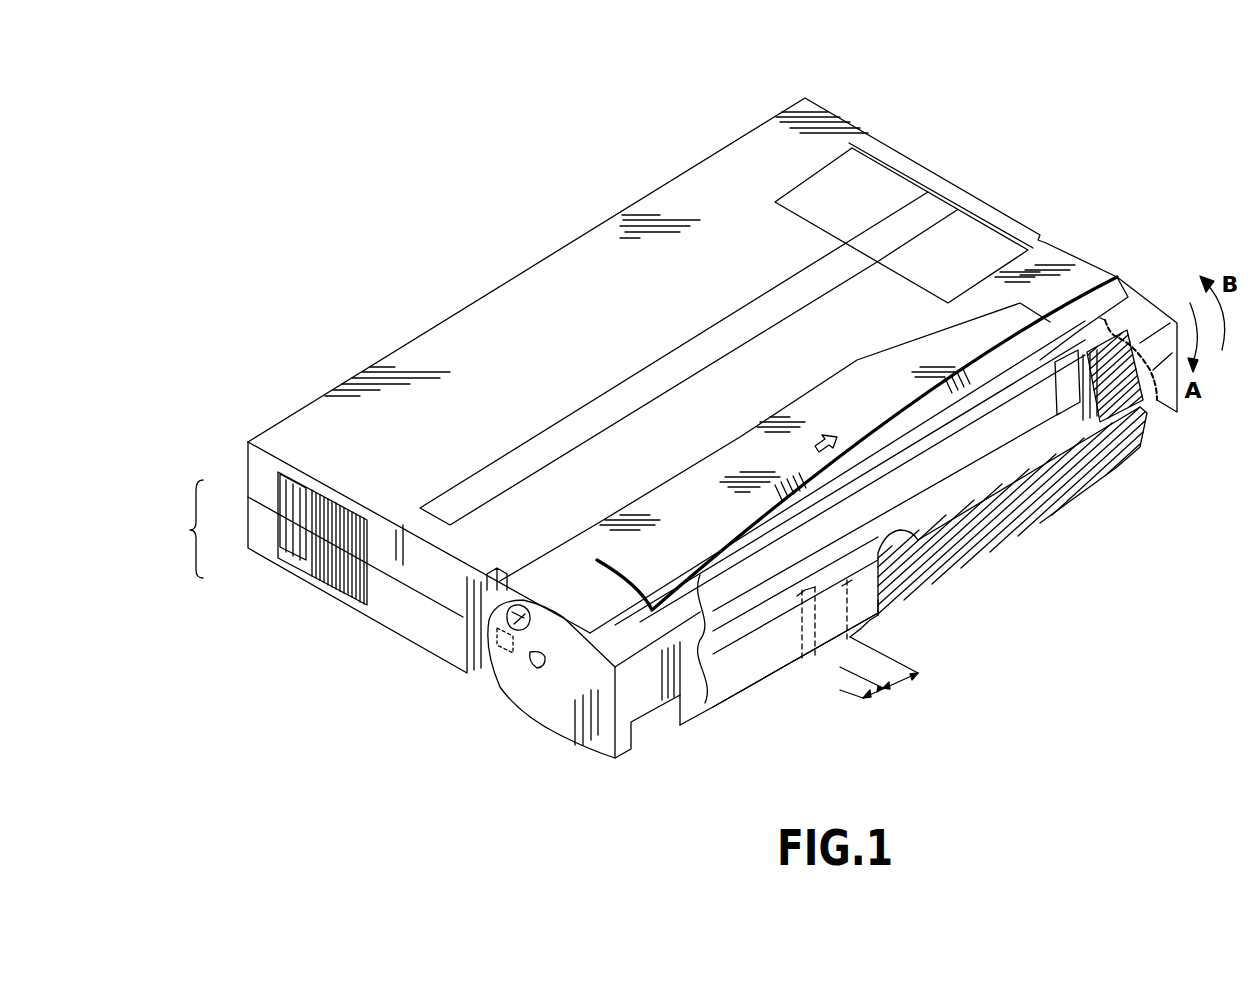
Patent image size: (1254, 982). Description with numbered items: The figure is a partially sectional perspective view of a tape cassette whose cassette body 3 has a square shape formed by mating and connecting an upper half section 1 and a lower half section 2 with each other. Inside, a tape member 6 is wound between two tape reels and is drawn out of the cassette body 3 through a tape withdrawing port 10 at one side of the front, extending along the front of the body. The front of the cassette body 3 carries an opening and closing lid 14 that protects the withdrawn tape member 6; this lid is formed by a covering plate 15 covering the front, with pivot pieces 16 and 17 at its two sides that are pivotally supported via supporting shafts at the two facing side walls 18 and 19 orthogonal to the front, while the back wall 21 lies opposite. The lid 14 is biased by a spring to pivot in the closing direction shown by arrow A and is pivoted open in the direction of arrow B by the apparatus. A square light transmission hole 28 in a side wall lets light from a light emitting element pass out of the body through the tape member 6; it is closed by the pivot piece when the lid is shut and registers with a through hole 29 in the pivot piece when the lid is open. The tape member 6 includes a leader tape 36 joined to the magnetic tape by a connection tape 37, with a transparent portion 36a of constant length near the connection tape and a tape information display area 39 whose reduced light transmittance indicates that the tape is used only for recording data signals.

The upper half section 1 is at (253, 482).
The lower half section 2 is at (257, 542).
The cassette body 3 is at (324, 557).
The tape member 6 is at (1057, 478).
The tape withdrawing port 10 is at (1117, 357).
The opening and closing lid 14 is at (698, 687).
The covering plate 15 is at (647, 703).
The pivot piece 16 is at (1085, 260).
The pivot piece 17 is at (552, 702).
The side wall 18 is at (973, 193).
The side wall 19 is at (397, 612).
The back wall 21 is at (690, 168).
The light transmission hole 28 is at (503, 653).
The through hole 29 is at (507, 603).
The leader tape 36 is at (753, 670).
The transparent portion 36a is at (880, 613).
The connection tape 37 is at (937, 558).
The tape information display area 39 is at (793, 657).